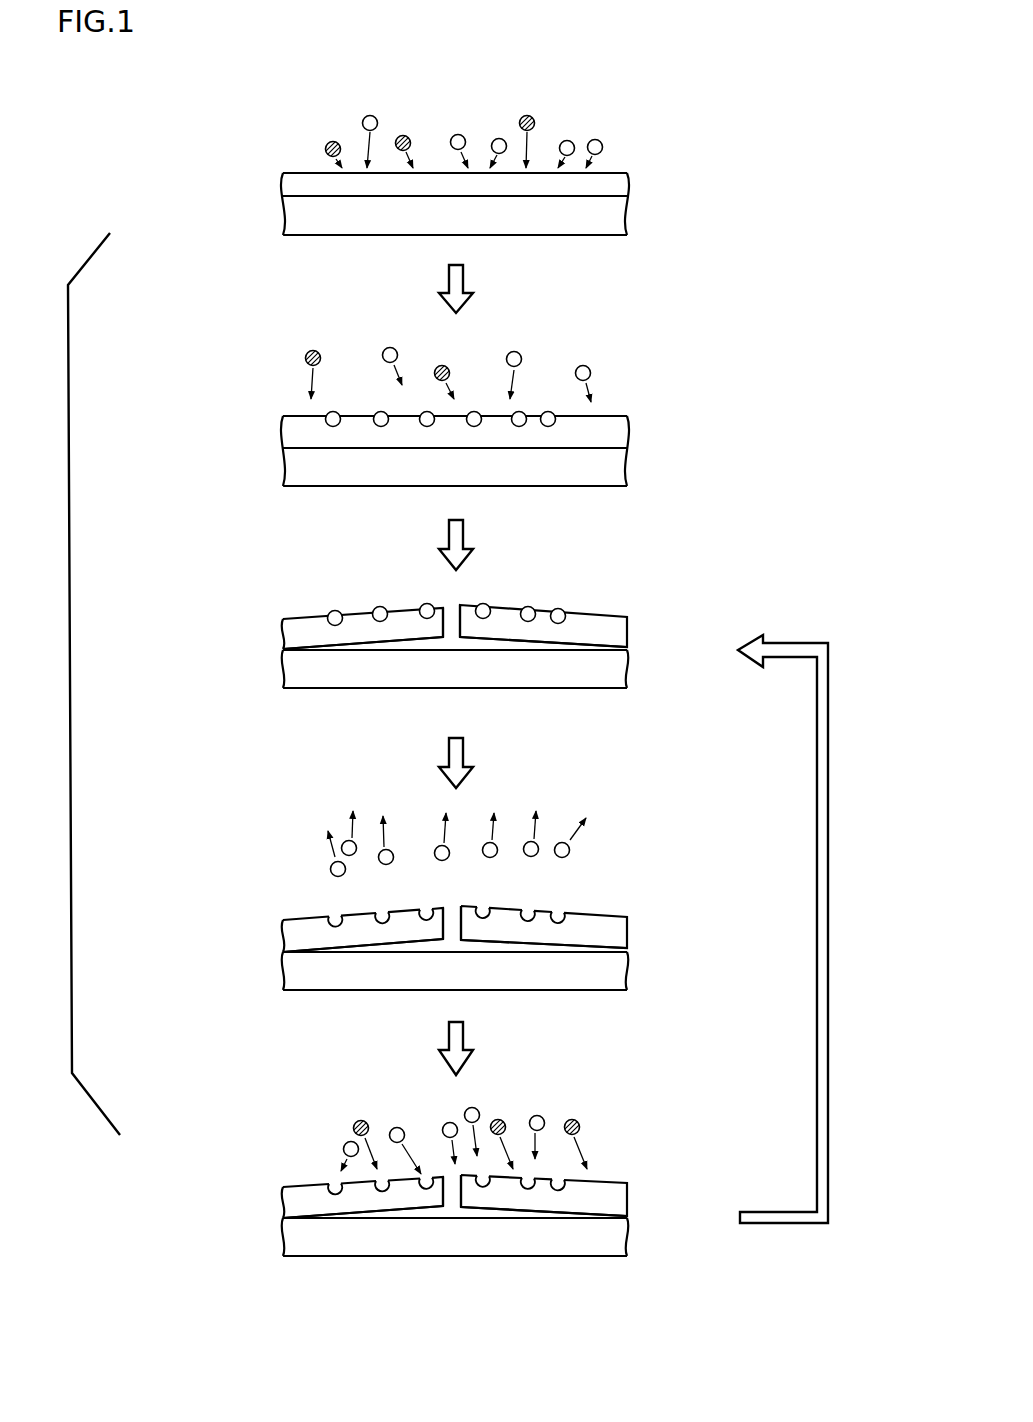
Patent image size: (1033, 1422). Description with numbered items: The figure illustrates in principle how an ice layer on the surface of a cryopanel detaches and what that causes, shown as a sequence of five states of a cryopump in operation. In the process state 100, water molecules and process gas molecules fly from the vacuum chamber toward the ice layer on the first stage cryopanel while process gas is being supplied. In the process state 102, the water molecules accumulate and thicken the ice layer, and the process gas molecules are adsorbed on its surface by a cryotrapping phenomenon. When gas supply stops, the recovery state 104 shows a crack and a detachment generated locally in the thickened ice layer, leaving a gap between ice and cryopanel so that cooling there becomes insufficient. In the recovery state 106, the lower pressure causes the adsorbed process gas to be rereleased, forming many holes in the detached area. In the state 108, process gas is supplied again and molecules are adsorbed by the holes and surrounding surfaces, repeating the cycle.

The process state 100 is at (221, 142).
The process state 102 is at (221, 384).
The recovery state 104 is at (222, 587).
The recovery state 106 is at (222, 889).
The state 108 is at (221, 1154).